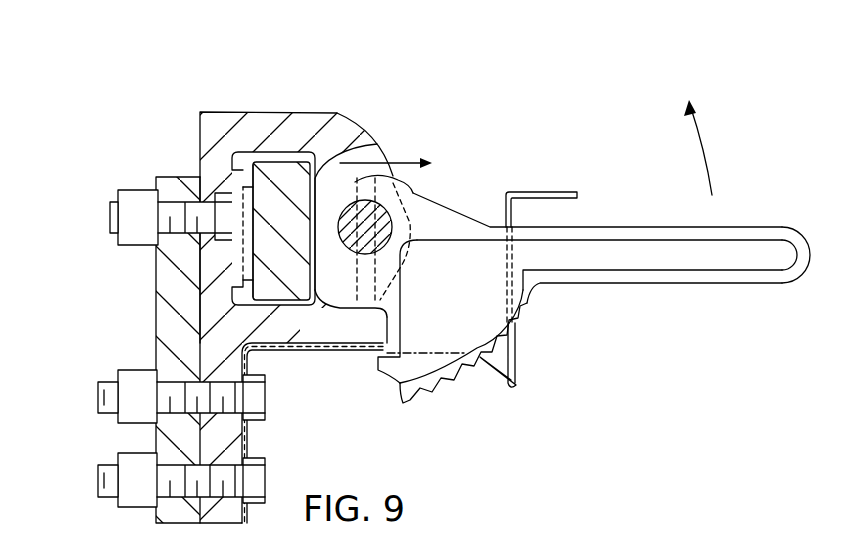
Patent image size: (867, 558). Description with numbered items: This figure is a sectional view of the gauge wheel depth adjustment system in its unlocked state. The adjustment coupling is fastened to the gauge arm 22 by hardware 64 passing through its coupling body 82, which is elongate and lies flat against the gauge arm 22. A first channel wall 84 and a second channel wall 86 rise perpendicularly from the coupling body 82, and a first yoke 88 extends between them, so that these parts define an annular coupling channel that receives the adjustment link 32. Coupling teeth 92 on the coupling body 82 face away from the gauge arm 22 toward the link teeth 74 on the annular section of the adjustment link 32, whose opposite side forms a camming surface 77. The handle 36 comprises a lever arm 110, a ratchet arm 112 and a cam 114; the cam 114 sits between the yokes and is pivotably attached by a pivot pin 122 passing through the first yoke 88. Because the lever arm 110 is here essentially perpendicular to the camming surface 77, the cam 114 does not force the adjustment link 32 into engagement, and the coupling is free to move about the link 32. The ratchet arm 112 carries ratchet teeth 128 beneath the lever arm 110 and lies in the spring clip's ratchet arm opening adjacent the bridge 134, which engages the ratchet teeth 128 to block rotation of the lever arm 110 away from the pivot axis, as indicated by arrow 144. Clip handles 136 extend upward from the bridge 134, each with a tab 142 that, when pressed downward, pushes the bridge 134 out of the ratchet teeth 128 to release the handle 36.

The gauge arm 22 is at (157, 332).
The adjustment link 32 is at (272, 168).
The handle 36 is at (603, 220).
The hardware 64 is at (110, 220).
The link teeth 74 is at (260, 240).
The camming surface 77 is at (350, 130).
The coupling body 82 is at (215, 283).
The first channel wall 84 is at (250, 127).
The second channel wall 86 is at (278, 280).
The first yoke 88 is at (345, 318).
The coupling teeth 92 is at (245, 183).
The lever arm 110 is at (745, 230).
The ratchet arm 112 is at (470, 313).
The cam 114 is at (333, 265).
The pivot pin 122 is at (343, 238).
The ratchet teeth 128 is at (522, 310).
The bridge 134 is at (493, 390).
The clip handles 136 is at (512, 215).
The tab 142 is at (527, 192).
The arrow 144 is at (708, 157).